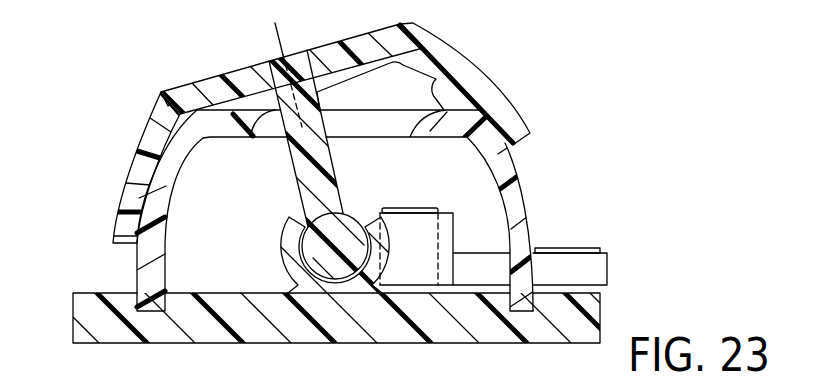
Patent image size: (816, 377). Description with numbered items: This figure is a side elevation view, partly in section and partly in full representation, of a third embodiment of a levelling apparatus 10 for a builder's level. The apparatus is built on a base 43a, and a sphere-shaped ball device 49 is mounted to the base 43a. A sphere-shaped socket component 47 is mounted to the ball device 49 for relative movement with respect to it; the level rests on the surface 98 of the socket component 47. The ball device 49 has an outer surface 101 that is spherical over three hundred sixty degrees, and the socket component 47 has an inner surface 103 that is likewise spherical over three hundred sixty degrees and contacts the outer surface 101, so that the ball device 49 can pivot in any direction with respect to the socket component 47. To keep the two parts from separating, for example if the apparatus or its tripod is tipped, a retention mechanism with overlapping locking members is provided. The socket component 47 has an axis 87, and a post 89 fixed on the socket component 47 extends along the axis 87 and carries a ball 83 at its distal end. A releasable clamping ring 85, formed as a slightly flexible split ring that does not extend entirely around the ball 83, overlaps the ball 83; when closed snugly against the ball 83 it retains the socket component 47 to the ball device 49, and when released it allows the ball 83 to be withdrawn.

The levelling apparatus 10 is at (100, 104).
The base 43a is at (603, 315).
The socket component 47 is at (134, 153).
The ball device 49 is at (528, 205).
The ball 83 is at (342, 250).
The clamping ring 85 is at (288, 240).
The axis 87 is at (278, 52).
The post 89 is at (320, 93).
The surface 98 is at (358, 33).
The outer surface 101 is at (518, 163).
The inner surface 103 is at (480, 83).